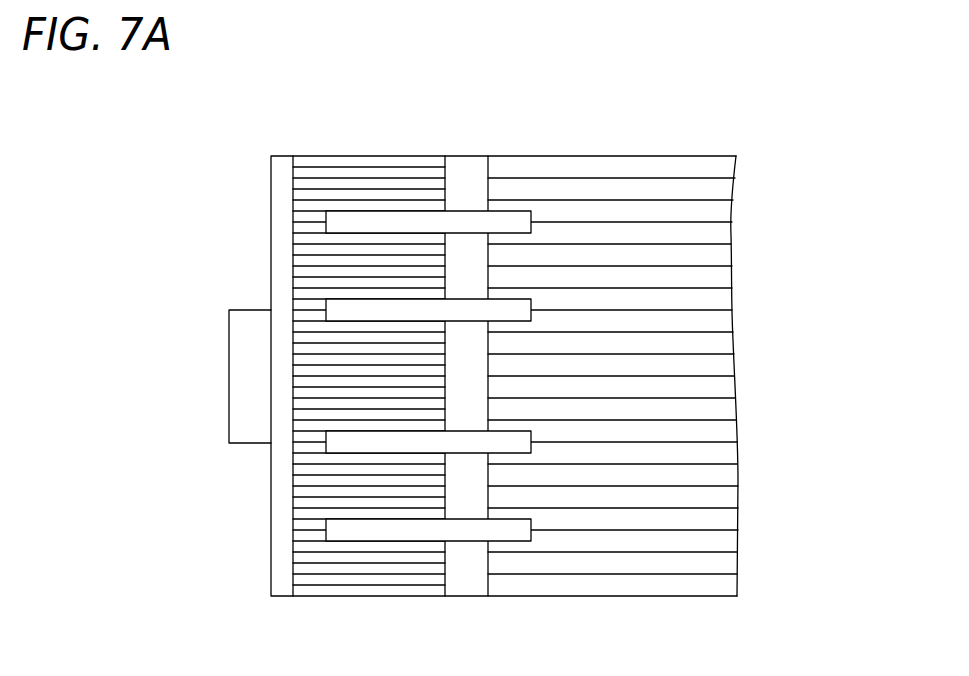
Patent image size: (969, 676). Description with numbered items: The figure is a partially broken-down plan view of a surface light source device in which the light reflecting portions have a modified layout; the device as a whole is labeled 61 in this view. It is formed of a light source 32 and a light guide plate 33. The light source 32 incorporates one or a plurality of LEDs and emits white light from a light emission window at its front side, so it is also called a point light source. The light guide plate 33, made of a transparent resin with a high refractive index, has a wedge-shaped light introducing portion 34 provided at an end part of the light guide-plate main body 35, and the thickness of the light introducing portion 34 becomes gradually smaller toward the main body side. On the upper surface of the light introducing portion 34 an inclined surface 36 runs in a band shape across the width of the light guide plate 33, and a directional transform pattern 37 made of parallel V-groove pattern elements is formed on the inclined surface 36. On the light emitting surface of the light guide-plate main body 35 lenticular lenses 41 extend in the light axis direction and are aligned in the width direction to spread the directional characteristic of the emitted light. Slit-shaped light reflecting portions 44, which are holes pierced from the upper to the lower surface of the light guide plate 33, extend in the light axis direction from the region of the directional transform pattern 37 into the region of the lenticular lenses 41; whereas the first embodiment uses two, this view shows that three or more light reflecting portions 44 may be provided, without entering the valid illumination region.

The light source 32 is at (243, 380).
The light guide plate 33 is at (547, 377).
The light introducing portion 34 is at (367, 596).
The light guide-plate main body 35 is at (613, 598).
The inclined surface 36 is at (380, 193).
The directional transform pattern 37 is at (380, 193).
The lenticular lenses 41 is at (697, 325).
The light reflecting portions 44 is at (406, 312).
The battery element 61 is at (700, 135).